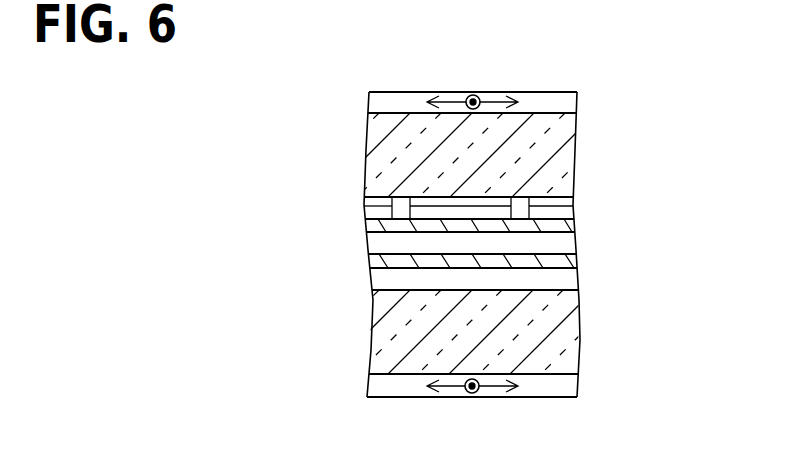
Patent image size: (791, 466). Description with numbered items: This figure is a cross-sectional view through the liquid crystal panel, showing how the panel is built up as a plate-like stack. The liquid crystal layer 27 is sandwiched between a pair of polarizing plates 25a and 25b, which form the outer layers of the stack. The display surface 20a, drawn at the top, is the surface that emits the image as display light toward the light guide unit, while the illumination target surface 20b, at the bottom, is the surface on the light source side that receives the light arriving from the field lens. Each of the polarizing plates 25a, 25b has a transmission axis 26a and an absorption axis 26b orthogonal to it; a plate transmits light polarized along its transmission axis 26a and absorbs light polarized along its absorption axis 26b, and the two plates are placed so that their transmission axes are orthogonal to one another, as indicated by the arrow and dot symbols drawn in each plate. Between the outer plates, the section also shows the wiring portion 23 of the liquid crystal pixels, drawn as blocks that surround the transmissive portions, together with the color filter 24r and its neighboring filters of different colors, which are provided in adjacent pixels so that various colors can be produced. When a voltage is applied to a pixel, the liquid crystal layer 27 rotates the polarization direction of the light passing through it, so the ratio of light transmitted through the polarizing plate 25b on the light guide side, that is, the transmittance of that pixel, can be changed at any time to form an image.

The display surface 20a is at (388, 83).
The illumination target surface 20b is at (393, 407).
The wiring portion 23 is at (404, 207).
The color filter 24r is at (383, 202).
The polarizing plate 25a is at (565, 384).
The polarizing plate 25b is at (565, 103).
The transmission axis 26a is at (480, 97).
The absorption axis 26b is at (466, 97).
The liquid crystal layer 27 is at (565, 243).